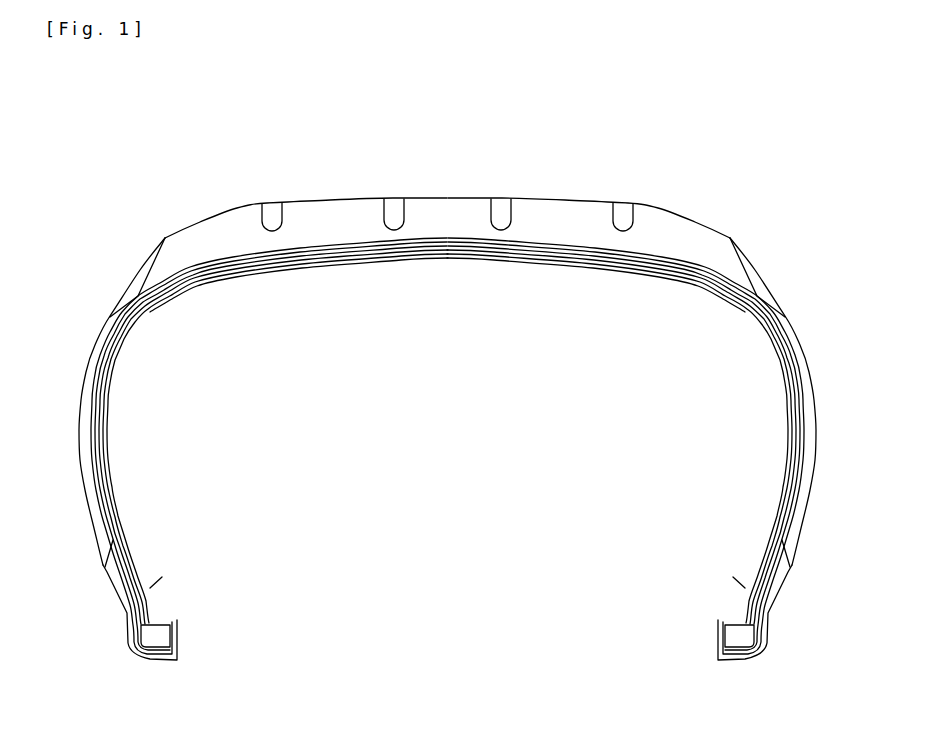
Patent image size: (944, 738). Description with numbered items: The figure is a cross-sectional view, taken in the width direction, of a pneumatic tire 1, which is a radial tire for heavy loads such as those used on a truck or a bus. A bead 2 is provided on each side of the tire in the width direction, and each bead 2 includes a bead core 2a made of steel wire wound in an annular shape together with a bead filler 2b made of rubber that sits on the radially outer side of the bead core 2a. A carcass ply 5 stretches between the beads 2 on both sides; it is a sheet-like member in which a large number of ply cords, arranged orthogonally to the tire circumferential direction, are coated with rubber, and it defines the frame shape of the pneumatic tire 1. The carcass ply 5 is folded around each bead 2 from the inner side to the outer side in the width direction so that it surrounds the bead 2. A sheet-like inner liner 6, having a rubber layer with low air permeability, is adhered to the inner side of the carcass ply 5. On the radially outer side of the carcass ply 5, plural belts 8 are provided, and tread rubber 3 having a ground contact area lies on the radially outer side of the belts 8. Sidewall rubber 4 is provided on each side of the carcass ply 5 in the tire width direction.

The pneumatic tire 1 is at (474, 92).
The bead 2 is at (257, 575).
The bead core 2a is at (153, 636).
The bead filler 2b is at (162, 578).
The tread rubber 3 is at (444, 202).
The sidewall rubber 4 is at (83, 455).
The carcass ply 5 is at (525, 254).
The inner liner 6 is at (120, 507).
The belts 8 is at (642, 247).